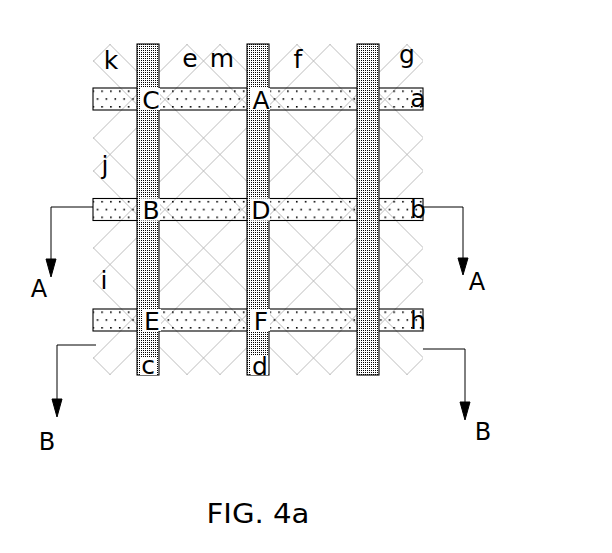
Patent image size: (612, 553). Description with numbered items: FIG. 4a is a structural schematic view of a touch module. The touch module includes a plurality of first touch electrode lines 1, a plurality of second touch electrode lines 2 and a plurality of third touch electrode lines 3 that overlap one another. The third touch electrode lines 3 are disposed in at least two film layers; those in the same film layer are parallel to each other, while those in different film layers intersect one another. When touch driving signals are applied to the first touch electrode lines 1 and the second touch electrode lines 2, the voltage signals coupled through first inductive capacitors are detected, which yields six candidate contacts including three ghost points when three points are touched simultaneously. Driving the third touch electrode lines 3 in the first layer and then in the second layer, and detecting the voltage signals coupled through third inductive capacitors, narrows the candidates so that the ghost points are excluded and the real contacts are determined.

The first touch electrode lines 1 is at (92, 89).
The second touch electrode lines 2 is at (148, 44).
The third touch electrode lines 3 is at (300, 373).